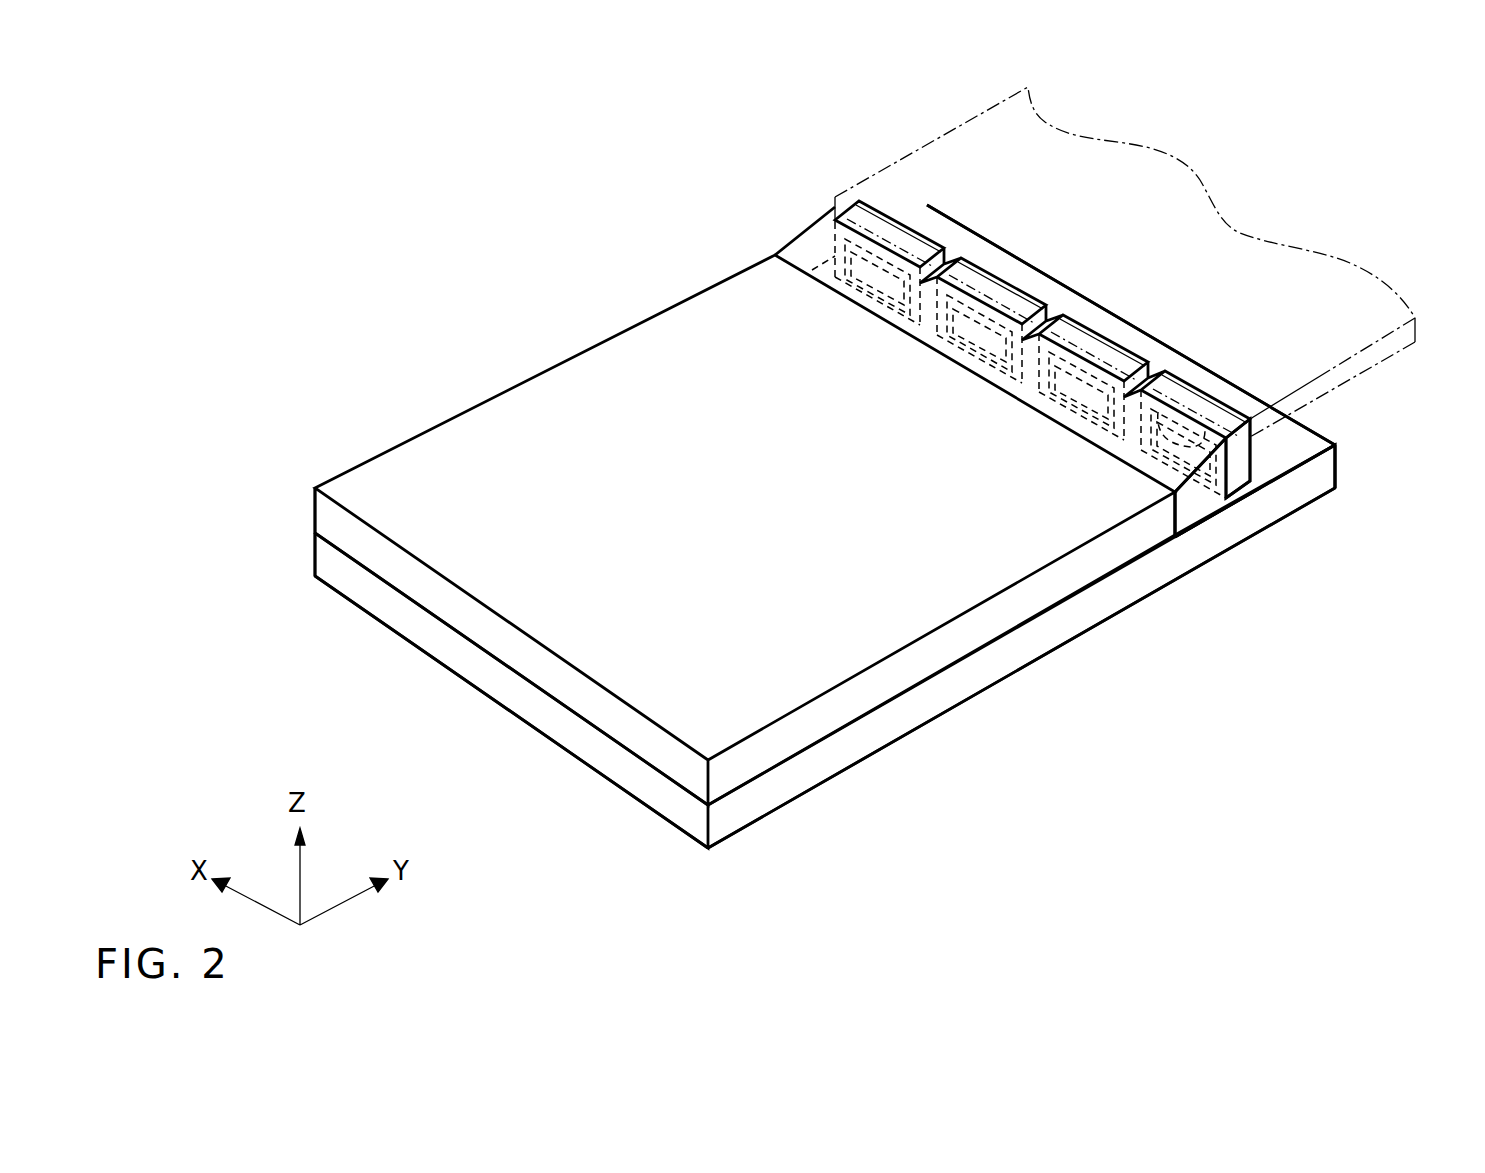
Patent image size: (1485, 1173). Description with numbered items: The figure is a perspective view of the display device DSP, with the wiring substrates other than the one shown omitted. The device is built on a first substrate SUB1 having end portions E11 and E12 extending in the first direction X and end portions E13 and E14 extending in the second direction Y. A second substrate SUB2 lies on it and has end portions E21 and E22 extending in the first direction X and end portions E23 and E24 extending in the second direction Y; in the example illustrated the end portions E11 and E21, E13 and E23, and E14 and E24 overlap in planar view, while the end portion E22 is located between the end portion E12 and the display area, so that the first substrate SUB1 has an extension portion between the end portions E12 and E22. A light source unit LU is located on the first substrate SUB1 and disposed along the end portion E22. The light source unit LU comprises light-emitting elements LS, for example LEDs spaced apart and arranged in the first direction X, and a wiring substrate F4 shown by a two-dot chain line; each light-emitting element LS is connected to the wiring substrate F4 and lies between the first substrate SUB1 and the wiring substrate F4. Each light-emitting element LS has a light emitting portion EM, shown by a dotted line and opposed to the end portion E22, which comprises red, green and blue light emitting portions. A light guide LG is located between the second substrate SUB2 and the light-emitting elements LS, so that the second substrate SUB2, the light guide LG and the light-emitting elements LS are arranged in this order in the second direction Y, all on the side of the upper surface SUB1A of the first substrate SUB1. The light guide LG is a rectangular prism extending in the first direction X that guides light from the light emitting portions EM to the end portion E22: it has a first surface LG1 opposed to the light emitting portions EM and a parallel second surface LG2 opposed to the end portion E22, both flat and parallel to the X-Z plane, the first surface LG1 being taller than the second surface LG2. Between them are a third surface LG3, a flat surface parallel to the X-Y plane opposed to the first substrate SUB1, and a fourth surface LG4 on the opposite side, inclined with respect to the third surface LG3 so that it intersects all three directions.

The first substrate SUB1 is at (690, 812).
The second substrate SUB2 is at (750, 768).
The upper surface SUB1A is at (1338, 484).
The end portion E11 is at (524, 696).
The end portion E12 is at (1338, 452).
The end portion E13 is at (933, 701).
The end portion E14 is at (316, 557).
The end portion E21 is at (585, 690).
The end portion E22 is at (1180, 509).
The end portion E23 is at (968, 622).
The end portion E24 is at (316, 506).
The light guide LG is at (815, 240).
The first surface LG1 is at (1230, 467).
The second surface LG2 is at (1170, 503).
The third surface LG3 is at (1193, 532).
The fourth surface LG4 is at (1173, 478).
The light-emitting element LS is at (1281, 446).
The light source unit LU is at (859, 162).
The light emitting portion EM is at (1165, 407).
The wiring substrate F4 is at (1365, 370).
The display device DSP is at (1205, 745).